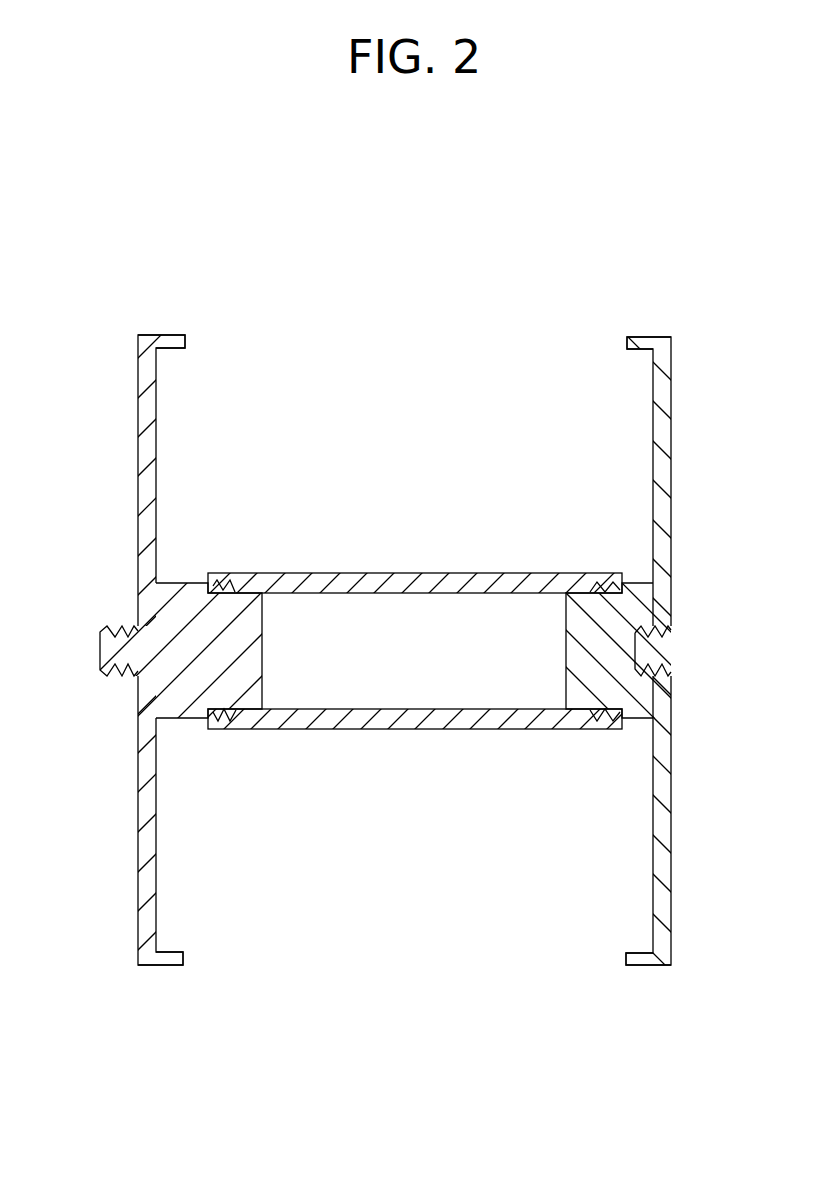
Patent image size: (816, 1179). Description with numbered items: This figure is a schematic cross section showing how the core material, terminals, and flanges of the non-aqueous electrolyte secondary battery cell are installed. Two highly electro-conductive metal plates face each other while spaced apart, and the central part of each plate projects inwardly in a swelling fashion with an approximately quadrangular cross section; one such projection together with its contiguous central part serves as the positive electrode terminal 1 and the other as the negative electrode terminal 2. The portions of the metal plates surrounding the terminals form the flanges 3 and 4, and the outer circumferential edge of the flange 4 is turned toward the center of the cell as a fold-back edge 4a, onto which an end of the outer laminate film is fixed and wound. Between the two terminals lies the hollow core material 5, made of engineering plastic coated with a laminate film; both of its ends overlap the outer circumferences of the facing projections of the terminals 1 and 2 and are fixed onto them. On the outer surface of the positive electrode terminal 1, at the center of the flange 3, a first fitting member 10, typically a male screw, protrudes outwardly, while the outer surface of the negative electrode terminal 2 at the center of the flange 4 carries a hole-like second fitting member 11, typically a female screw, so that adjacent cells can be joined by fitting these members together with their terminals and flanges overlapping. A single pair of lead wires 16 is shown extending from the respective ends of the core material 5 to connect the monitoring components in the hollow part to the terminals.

The positive electrode terminal 1 is at (172, 692).
The negative electrode terminal 2 is at (628, 687).
The flange 3 is at (147, 440).
The flange 4 is at (668, 480).
The fold-back edge 4a is at (668, 337).
The core material 5 is at (412, 573).
The first fitting member 10 is at (115, 647).
The second fitting member 11 is at (636, 652).
The lead wires 16 is at (325, 657).